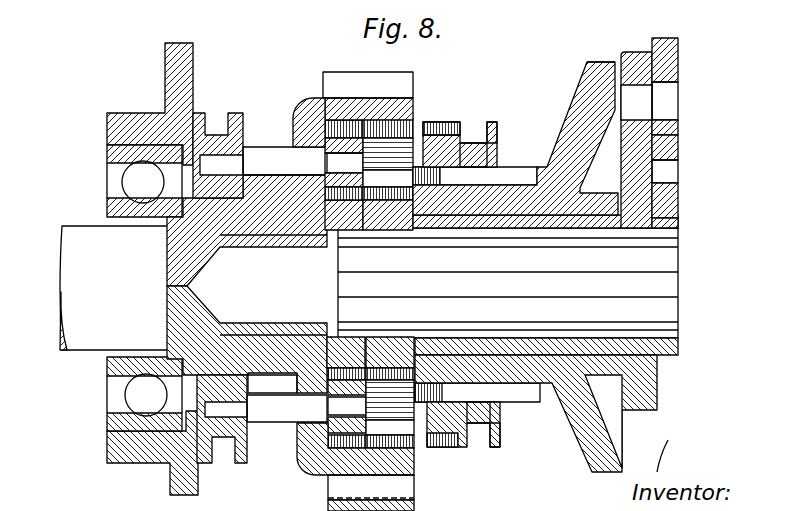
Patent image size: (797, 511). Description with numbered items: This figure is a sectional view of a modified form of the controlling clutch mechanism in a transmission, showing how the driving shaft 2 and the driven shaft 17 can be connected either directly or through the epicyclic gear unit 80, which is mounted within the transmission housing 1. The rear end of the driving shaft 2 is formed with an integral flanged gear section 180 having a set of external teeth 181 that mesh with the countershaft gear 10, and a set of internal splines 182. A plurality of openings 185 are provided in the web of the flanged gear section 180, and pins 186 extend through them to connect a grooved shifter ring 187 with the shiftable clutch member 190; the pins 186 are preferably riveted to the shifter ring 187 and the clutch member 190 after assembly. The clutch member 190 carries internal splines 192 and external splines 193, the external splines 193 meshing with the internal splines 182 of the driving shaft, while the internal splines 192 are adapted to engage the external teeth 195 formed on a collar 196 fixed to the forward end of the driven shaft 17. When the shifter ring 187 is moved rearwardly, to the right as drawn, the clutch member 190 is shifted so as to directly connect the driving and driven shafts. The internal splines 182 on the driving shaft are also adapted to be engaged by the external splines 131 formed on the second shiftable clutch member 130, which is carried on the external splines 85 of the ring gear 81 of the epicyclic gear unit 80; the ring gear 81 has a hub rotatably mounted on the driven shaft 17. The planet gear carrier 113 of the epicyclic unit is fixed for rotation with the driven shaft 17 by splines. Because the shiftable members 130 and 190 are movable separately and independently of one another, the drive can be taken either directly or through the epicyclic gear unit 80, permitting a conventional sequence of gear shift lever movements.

The transmission housing 1 is at (163, 62).
The driving shaft 2 is at (78, 233).
The countershaft gear 10 is at (415, 506).
The driven shaft 17 is at (648, 262).
The epicyclic gear unit 80 is at (578, 107).
The ring gear 81 is at (597, 60).
The bushing 85 is at (510, 226).
The planet gear carrier 113 is at (634, 48).
The second shiftable clutch member 130 is at (498, 133).
The external splines 131 is at (470, 141).
The flanged gear section 180 is at (303, 108).
The external teeth 181 is at (333, 75).
The internal splines 182 is at (415, 120).
The openings 185 is at (302, 417).
The pins 186 is at (260, 147).
The grooved shifter ring 187 is at (218, 134).
The shiftable clutch member 190 is at (324, 153).
The internal splines 192 is at (326, 240).
The external splines 193 is at (357, 118).
The external teeth 195 is at (441, 125).
The collar 196 is at (381, 232).